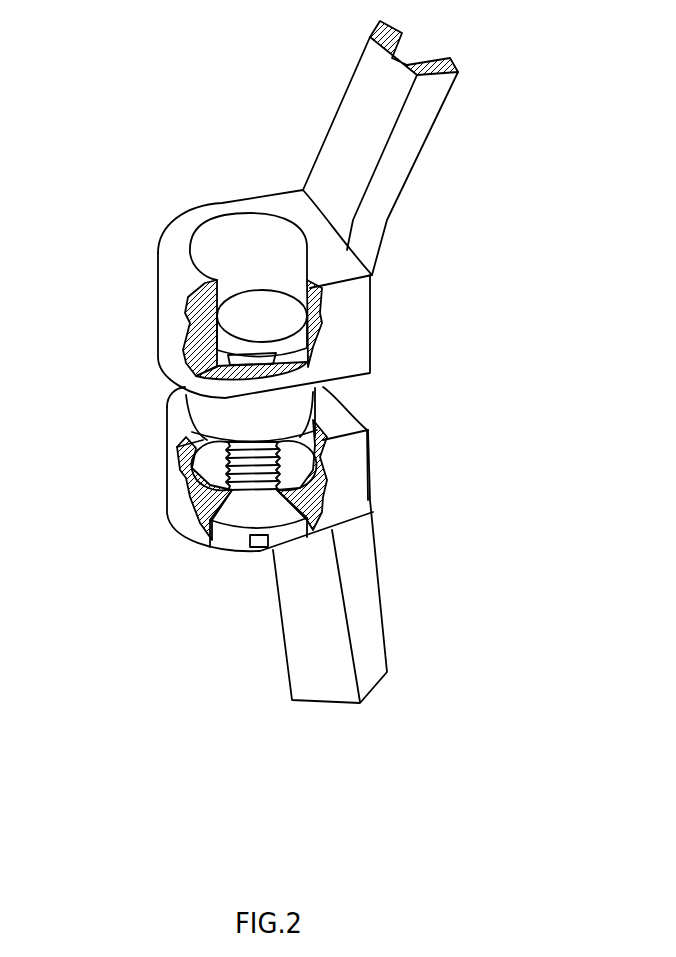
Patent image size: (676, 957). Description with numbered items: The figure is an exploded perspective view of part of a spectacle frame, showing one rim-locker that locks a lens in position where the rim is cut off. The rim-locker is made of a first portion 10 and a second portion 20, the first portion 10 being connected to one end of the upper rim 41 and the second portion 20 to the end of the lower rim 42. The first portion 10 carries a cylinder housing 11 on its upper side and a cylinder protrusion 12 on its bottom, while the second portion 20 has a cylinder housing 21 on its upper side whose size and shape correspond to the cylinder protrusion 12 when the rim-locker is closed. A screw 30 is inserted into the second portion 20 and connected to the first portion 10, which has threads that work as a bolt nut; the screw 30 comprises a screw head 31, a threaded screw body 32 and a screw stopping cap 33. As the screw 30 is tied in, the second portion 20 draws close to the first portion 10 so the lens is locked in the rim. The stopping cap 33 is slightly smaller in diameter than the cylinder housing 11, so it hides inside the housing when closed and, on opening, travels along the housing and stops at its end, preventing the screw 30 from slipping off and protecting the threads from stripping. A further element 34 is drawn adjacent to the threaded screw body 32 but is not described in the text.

The upper coupling body 10 is at (175, 243).
The through hole of upper body 11 is at (238, 245).
The cylindrical stem of upper body 12 is at (197, 405).
The lower coupling body 20 is at (178, 487).
The receiving hole of lower body 21 is at (197, 430).
The nut 30 is at (237, 513).
The nut flange 31 is at (252, 513).
The threaded bolt 32 is at (277, 472).
The bolt head 33 is at (280, 320).
The spherical portion 34 is at (280, 448).
The first arm 41 is at (425, 107).
The second arm 42 is at (365, 658).